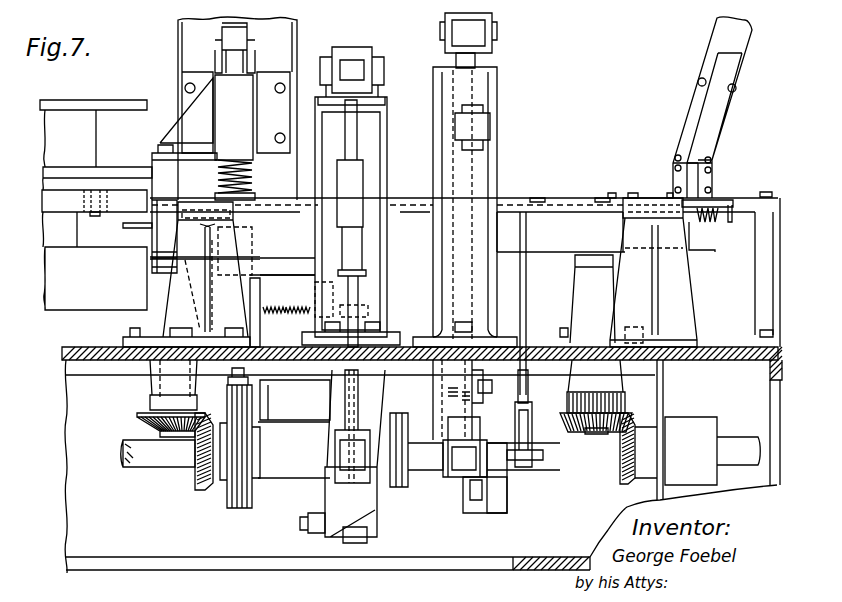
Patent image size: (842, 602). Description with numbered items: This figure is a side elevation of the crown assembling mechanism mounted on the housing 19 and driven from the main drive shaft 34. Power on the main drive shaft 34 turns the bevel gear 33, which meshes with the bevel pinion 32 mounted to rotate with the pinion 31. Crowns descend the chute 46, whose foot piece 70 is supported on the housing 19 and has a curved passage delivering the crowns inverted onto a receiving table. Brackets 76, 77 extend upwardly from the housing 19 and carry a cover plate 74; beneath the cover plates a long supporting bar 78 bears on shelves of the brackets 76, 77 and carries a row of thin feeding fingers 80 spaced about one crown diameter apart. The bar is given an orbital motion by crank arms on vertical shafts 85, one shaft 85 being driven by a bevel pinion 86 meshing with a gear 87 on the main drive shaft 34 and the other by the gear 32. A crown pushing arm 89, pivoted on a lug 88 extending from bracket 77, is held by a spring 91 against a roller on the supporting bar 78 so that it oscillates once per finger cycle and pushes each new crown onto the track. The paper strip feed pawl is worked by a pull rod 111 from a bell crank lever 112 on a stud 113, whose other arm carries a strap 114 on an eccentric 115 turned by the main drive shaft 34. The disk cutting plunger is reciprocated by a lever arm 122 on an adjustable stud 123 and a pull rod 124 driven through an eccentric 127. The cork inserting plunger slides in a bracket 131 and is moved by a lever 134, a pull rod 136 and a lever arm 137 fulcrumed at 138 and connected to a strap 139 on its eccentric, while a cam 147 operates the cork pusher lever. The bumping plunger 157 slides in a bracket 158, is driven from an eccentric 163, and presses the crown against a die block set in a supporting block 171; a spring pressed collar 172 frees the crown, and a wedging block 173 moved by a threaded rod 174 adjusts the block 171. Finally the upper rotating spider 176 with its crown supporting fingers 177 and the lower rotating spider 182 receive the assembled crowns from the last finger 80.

The housing 19 is at (728, 350).
The pinion 31 is at (624, 395).
The bevel pinion 32 is at (580, 434).
The bevel gear 33 is at (625, 482).
The main drive shaft 34 is at (738, 448).
The chute 46 is at (722, 133).
The foot piece 70 is at (713, 180).
The cover plate 74 is at (612, 200).
The bracket 76 is at (186, 306).
The bracket 77 is at (662, 272).
The supporting bar 78 is at (560, 277).
The fingers 80 is at (537, 203).
The vertical shaft 85 is at (182, 436).
The bevel pinion 86 is at (138, 424).
The bevel gear 87 is at (200, 490).
The lug 88 is at (706, 226).
The crown pushing arm 89 is at (748, 190).
The spring 91 is at (720, 216).
The pull rod 111 is at (527, 330).
The bell crank lever 112 is at (503, 480).
The stud 113 is at (510, 466).
The strap 114 is at (480, 512).
The eccentric 115 is at (458, 486).
The lever arm 122 is at (480, 25).
The stud 123 is at (478, 60).
The pull rod 124 is at (473, 373).
The eccentric 127 is at (455, 410).
The bracket 131 is at (389, 190).
The lever 134 is at (356, 47).
The pull rod 136 is at (357, 130).
The lever arm 137 is at (360, 505).
The fulcrum 138 is at (325, 520).
The strap 139 is at (368, 540).
The cam 147 is at (392, 425).
The bumping plunger 157 is at (240, 68).
The bracket 158 is at (224, 108).
The eccentric 163 is at (238, 500).
The supporting block 171 is at (254, 250).
The spring pressed collar 172 is at (254, 183).
The wedging block 173 is at (262, 295).
The threaded rod 174 is at (286, 321).
The upper rotating spider 176 is at (93, 133).
The crown supporting fingers 177 is at (108, 212).
The lower rotating spider 182 is at (95, 278).